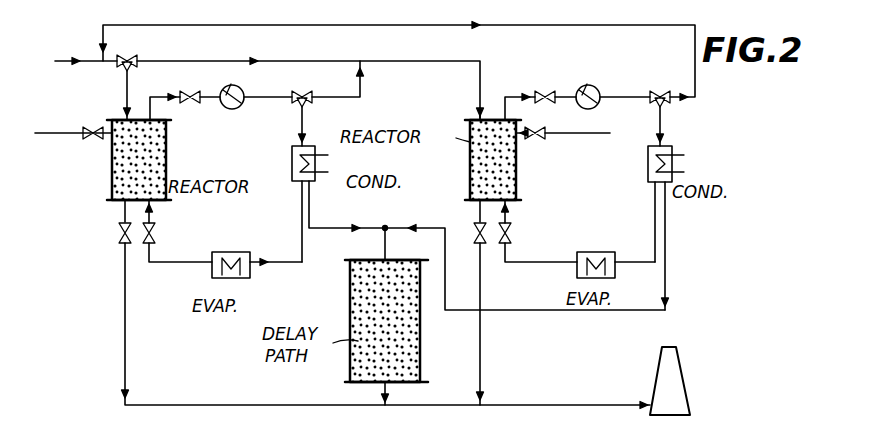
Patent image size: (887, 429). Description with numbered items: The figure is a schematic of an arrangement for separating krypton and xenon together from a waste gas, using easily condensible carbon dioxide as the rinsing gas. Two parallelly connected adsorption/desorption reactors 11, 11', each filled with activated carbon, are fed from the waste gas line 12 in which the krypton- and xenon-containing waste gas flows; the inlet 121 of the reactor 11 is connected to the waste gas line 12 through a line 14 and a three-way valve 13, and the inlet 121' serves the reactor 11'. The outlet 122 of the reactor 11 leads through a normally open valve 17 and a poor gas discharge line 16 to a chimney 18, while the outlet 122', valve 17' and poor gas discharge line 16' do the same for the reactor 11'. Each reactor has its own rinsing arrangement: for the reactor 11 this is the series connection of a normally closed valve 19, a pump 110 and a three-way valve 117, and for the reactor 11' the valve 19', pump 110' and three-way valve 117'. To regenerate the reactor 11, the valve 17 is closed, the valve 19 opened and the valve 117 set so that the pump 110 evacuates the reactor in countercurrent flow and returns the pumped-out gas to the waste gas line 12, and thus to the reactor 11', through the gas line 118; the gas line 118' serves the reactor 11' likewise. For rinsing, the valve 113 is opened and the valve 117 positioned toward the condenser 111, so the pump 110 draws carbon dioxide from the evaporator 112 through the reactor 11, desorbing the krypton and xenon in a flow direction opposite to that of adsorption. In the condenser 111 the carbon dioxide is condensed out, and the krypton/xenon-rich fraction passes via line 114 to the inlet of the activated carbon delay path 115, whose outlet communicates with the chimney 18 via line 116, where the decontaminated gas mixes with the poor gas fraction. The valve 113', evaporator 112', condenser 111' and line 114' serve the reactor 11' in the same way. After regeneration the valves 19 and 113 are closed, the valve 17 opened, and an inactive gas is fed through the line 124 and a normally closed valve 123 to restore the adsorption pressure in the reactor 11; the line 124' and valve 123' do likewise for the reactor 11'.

The waste gas line 12 is at (66, 58).
The three-way valve 13 is at (129, 55).
The line 14 is at (122, 82).
The inlet 121 is at (103, 108).
The adsorption/desorption reactor 11 is at (139, 160).
The line 124 is at (73, 122).
The normally closed valve 123 is at (233, 191).
The outlet 122 is at (102, 213).
The normally open valve 17 is at (110, 242).
The poor gas discharge line 16 is at (386, 326).
The valve 113 is at (177, 231).
The evaporator 112 is at (257, 254).
The normally closed valve 19 is at (175, 95).
The pump 110 is at (246, 108).
The three-way valve 117 is at (304, 88).
The gas line 118 is at (358, 79).
The condenser 111 is at (295, 144).
The line 114 is at (483, 245).
The activated carbon delay path 115 is at (392, 334).
The line 116 is at (395, 386).
The gas line 118' is at (398, 61).
The inlet 121' is at (460, 106).
The adsorption/desorption reactor 11' is at (493, 160).
The normally closed valve 19' is at (530, 94).
The pump 110' is at (602, 89).
The three-way valve 117' is at (664, 88).
The condenser 111' is at (647, 144).
The line 114' is at (683, 246).
The line 124' is at (590, 124).
The normally closed valve 123' is at (549, 145).
The outlet 122' is at (459, 213).
The normally open valve 17' is at (467, 244).
The poor gas discharge line 16' is at (499, 324).
The valve 113' is at (538, 231).
The evaporator 112' is at (616, 251).
The chimney 18 is at (670, 381).